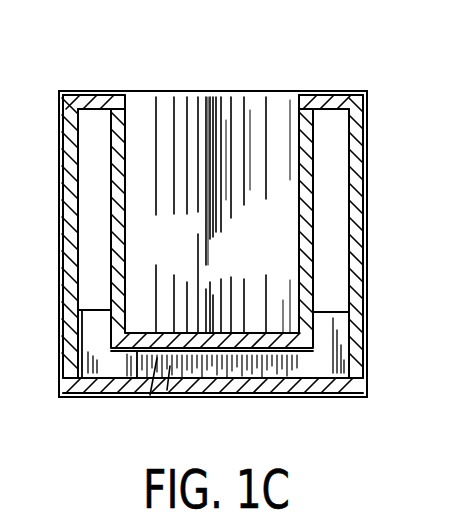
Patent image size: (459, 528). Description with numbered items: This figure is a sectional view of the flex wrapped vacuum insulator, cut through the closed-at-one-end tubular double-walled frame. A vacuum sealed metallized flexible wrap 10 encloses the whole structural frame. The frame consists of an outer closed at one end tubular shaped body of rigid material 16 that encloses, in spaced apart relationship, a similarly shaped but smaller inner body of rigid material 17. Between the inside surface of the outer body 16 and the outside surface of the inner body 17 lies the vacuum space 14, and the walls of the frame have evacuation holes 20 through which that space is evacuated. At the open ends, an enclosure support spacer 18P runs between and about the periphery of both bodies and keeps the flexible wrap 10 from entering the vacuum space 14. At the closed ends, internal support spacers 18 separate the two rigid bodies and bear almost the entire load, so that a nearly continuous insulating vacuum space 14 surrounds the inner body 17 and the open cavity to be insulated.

The vacuum sealed metallized flexible wrap 10 is at (116, 112).
The vacuum space 14 is at (334, 283).
The outer closed at one end tubular shaped body of rigid material 16 is at (58, 206).
The inner body of rigid material 17 is at (117, 168).
The internal support spacers 18 is at (93, 359).
The enclosure support spacer 18P is at (327, 92).
The evacuation holes 20 is at (262, 376).